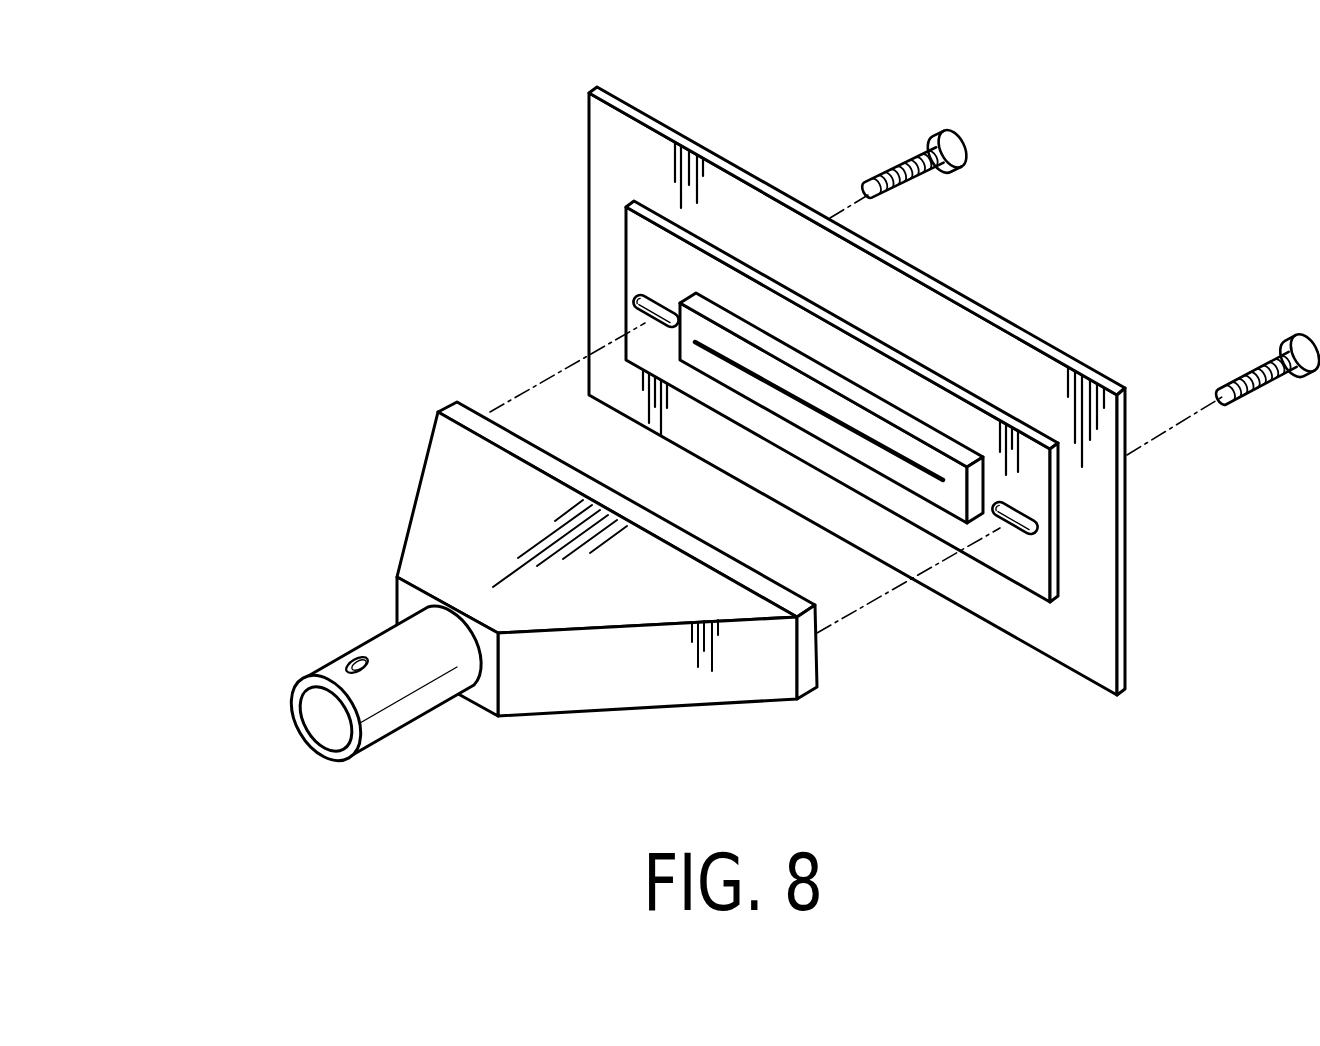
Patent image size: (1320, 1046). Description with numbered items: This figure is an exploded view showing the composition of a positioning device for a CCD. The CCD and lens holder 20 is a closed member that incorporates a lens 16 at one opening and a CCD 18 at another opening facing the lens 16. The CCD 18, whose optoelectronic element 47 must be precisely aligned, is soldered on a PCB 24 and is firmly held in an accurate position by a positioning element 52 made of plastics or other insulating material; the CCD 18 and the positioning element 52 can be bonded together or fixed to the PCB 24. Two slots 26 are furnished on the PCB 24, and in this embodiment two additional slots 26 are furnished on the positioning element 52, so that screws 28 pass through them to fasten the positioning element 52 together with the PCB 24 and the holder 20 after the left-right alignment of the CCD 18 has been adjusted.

The lens 16 is at (323, 725).
The CCD 18 is at (919, 428).
The CCD and lens holder 20 is at (587, 717).
The PCB 24 is at (1080, 617).
The slots 26 is at (1012, 527).
The screws 28 is at (1278, 384).
The optoelectronic element 47 is at (853, 433).
The positioning element 52 is at (1040, 568).